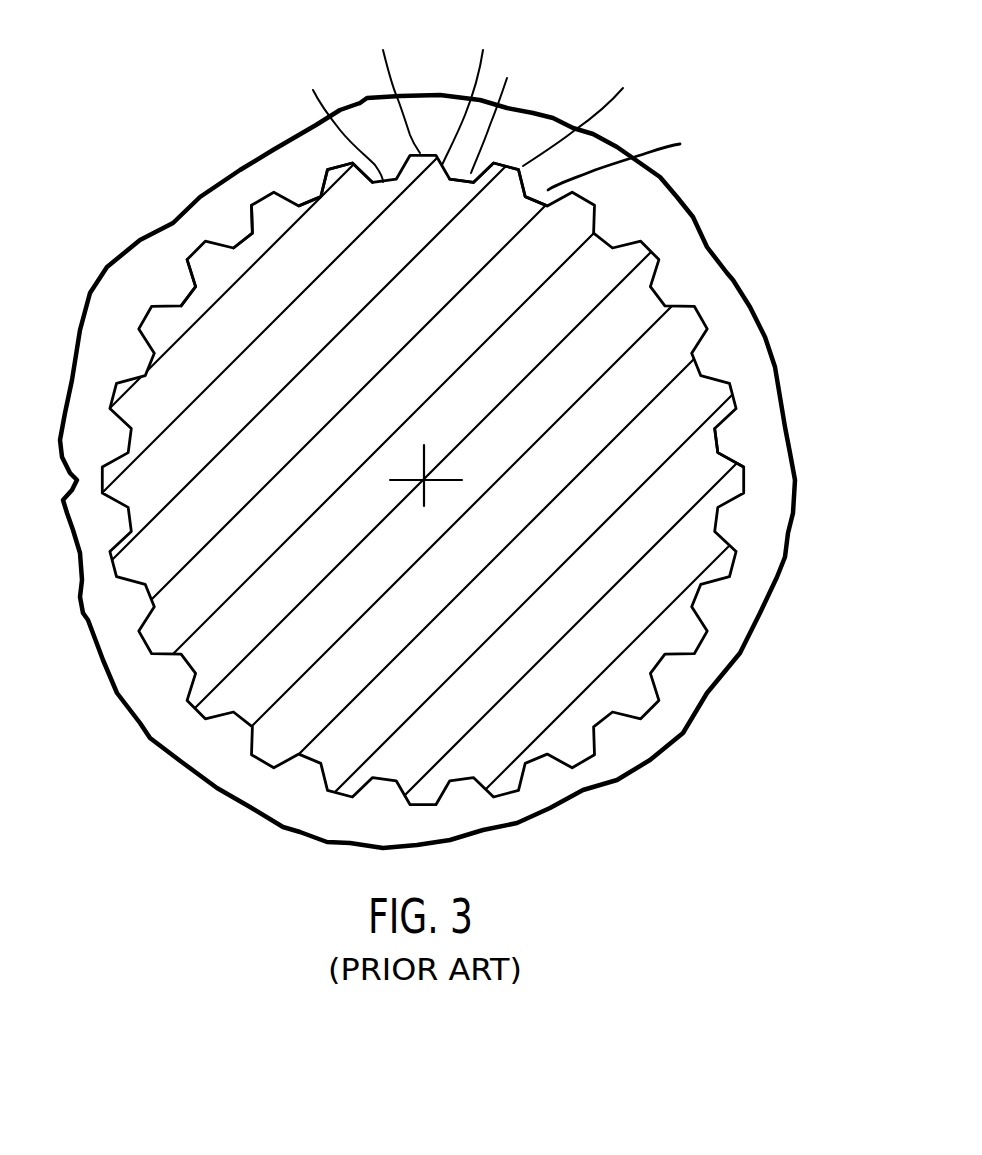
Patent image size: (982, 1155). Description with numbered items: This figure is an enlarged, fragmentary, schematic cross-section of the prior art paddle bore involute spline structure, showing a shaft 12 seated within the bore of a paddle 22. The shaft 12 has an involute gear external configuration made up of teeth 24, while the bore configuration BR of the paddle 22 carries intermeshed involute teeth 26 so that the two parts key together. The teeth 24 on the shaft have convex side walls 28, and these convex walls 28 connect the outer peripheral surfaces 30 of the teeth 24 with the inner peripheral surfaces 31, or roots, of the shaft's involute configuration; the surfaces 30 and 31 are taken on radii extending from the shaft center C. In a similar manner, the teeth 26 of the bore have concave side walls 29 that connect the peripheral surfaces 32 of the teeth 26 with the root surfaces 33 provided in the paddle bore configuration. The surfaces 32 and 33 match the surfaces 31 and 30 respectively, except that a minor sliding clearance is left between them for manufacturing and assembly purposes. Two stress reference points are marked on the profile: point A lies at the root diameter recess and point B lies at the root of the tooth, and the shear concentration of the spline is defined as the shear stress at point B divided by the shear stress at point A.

The shaft 12 is at (684, 388).
The paddle 22 is at (677, 227).
The teeth 24 is at (343, 175).
The teeth 26 is at (509, 114).
The convex side walls 28 is at (483, 163).
The concave side walls 29 is at (471, 89).
The outer peripheral surfaces 30 is at (591, 110).
The inner peripheral surfaces 31 is at (631, 155).
The peripheral surfaces 32 is at (335, 119).
The root surfaces 33 is at (392, 83).
The point A is at (200, 298).
The point B is at (262, 234).
The shaft center C is at (428, 479).
The bore configuration BR is at (730, 442).